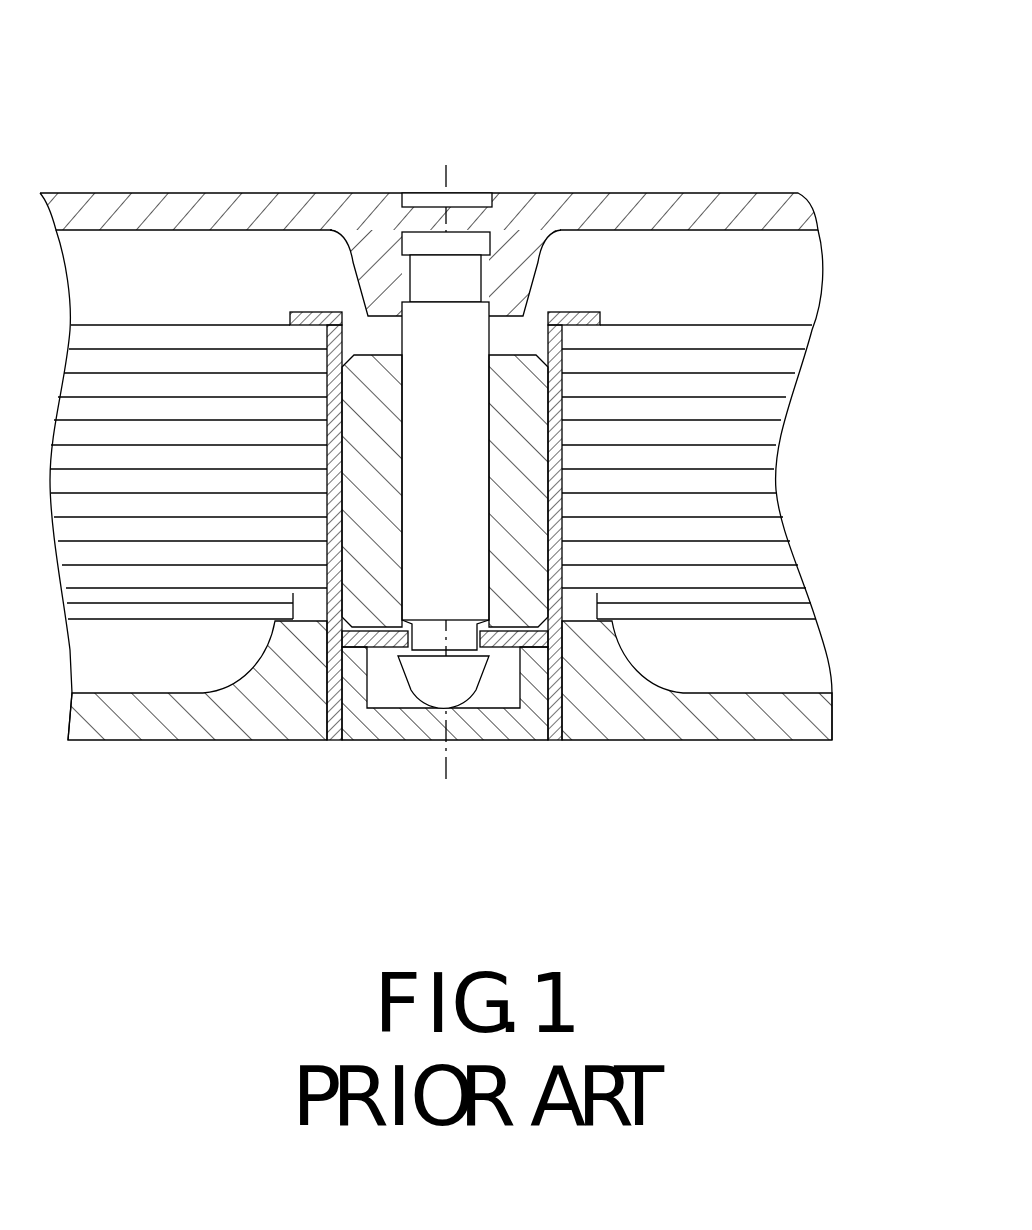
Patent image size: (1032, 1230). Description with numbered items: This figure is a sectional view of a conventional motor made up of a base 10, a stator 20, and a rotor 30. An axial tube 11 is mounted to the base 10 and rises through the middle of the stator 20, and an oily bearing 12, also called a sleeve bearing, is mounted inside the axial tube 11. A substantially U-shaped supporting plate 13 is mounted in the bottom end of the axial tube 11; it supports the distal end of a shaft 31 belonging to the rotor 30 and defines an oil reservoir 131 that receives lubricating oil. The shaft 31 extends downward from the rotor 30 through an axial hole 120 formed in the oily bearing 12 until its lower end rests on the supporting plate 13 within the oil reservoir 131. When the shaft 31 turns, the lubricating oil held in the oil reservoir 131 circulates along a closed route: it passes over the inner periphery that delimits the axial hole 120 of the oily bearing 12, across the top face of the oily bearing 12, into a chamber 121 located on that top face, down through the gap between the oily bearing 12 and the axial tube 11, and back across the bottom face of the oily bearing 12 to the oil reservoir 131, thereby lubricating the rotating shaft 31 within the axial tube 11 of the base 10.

The base 10 is at (700, 775).
The axial tube 11 is at (401, 486).
The oily bearing 12 is at (528, 592).
The supporting plate 13 is at (375, 728).
The axial hole 120 is at (397, 548).
The chamber 121 is at (350, 347).
The oil reservoir 131 is at (405, 700).
The stator 20 is at (836, 465).
The rotor 30 is at (665, 162).
The shaft 31 is at (467, 318).